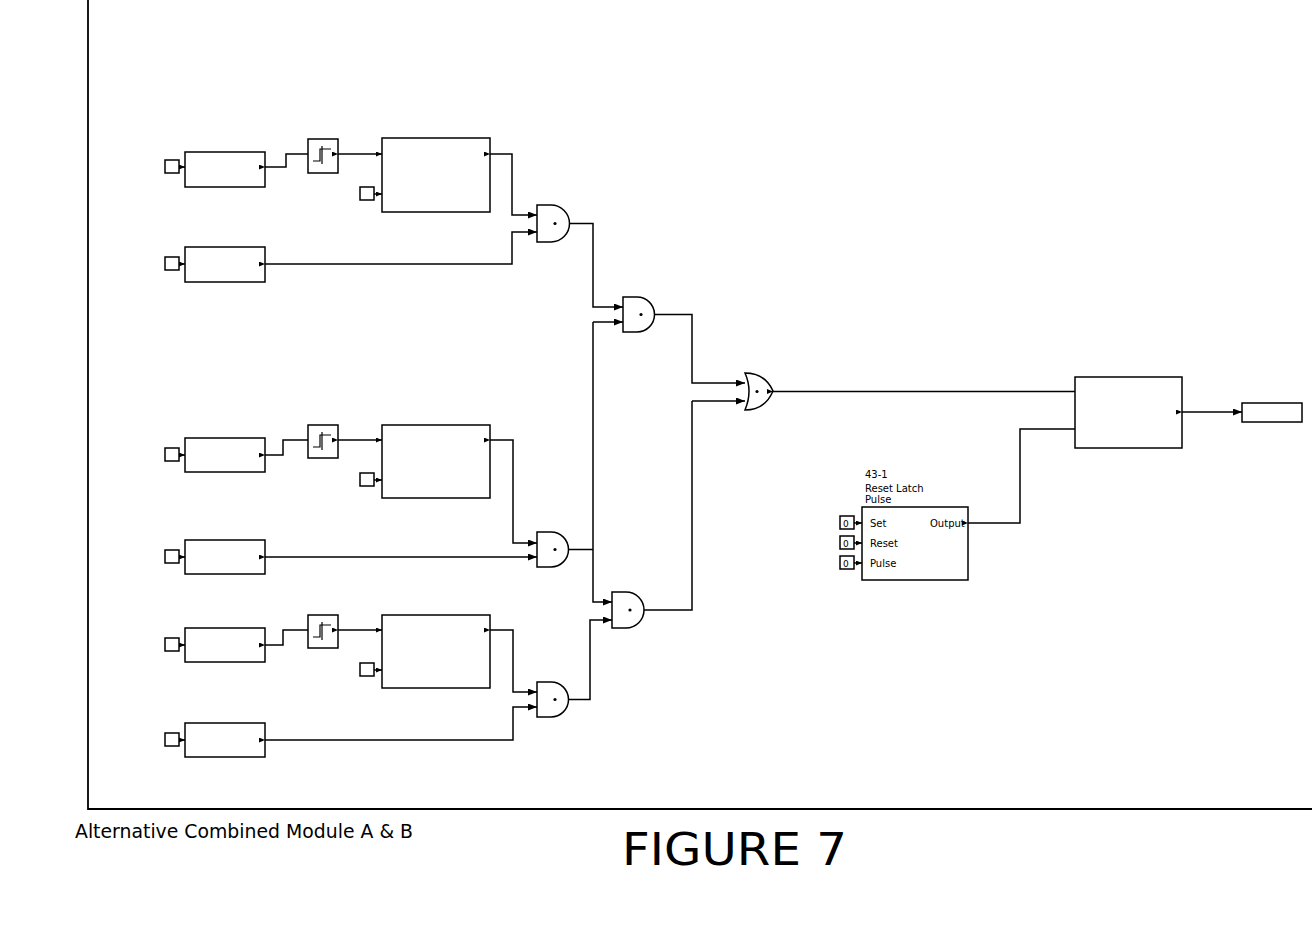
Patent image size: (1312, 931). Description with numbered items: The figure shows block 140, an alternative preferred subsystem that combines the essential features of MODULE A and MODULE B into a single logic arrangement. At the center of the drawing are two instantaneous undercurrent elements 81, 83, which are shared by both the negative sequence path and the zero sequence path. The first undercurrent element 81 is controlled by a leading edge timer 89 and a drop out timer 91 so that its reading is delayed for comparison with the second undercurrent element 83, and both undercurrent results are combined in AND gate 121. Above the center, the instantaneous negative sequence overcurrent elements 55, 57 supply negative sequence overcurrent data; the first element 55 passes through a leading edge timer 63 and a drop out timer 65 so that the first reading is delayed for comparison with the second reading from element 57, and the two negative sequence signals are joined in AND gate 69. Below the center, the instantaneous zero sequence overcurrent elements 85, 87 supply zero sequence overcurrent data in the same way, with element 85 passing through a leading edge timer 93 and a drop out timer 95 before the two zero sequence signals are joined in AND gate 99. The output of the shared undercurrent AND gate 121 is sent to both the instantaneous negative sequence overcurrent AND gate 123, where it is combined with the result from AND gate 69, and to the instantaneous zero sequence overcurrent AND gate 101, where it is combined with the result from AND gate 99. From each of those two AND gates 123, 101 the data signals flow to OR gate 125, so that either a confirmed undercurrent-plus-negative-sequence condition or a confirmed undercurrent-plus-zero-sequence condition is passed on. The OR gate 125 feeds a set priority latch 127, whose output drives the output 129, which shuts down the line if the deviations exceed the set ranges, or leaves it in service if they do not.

The instantaneous negative sequence overcurrent element 55 is at (194, 178).
The instantaneous negative sequence overcurrent element 57 is at (194, 275).
The leading edge timer 63 is at (337, 140).
The drop out timer 65 is at (485, 138).
The AND gate 69 is at (540, 243).
The instantaneous undercurrent element 81 is at (194, 463).
The instantaneous undercurrent element 83 is at (194, 565).
The instantaneous zero sequence overcurrent element 85 is at (194, 653).
The instantaneous zero sequence overcurrent element 87 is at (194, 748).
The leading edge timer 89 is at (330, 425).
The drop out timer 91 is at (485, 425).
The leading edge timer 93 is at (338, 618).
The drop out timer 95 is at (485, 615).
The AND gate 99 is at (550, 718).
The instantaneous zero sequence overcurrent AND gate 101 is at (625, 592).
The AND gate 121 is at (545, 532).
The instantaneous negative sequence overcurrent AND gate 123 is at (630, 297).
The OR gate 125 is at (755, 373).
The latch 127 is at (1175, 377).
The output 129 is at (1275, 423).
The block 140 is at (988, 810).